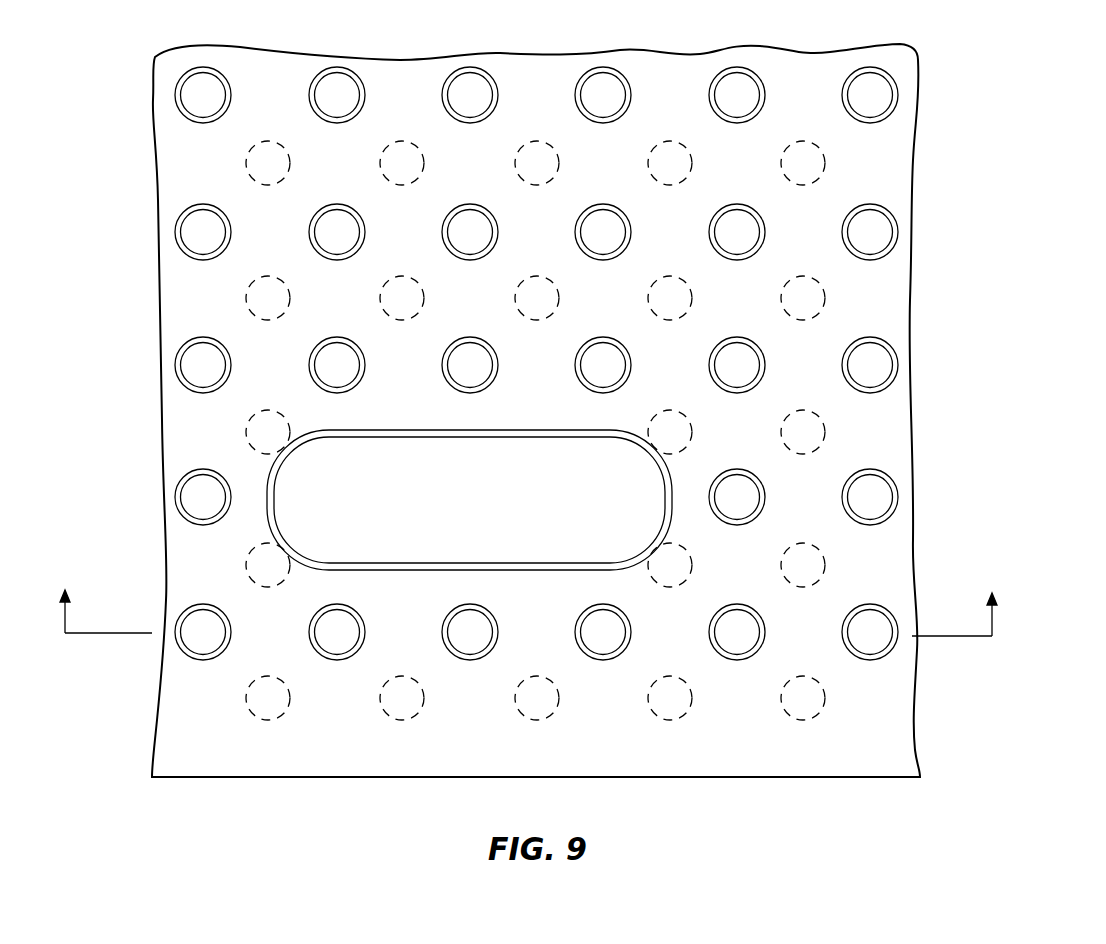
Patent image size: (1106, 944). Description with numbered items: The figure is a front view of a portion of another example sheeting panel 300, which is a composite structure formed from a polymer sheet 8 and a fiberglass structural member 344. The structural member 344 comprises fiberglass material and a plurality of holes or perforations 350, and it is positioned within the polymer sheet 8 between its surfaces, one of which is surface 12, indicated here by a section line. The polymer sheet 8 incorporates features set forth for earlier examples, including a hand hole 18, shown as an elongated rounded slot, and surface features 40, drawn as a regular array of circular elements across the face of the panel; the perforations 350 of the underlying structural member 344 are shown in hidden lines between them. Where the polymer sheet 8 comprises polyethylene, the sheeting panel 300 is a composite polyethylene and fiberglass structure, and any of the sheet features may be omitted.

The sheeting panel 300 is at (1003, 268).
The surface features 40 is at (878, 98).
The holes or perforations 350 is at (825, 152).
The structural member 344 is at (295, 722).
The hand hole 18 is at (600, 440).
The surface 12 is at (531, 598).
The polymer sheet 8 is at (150, 760).